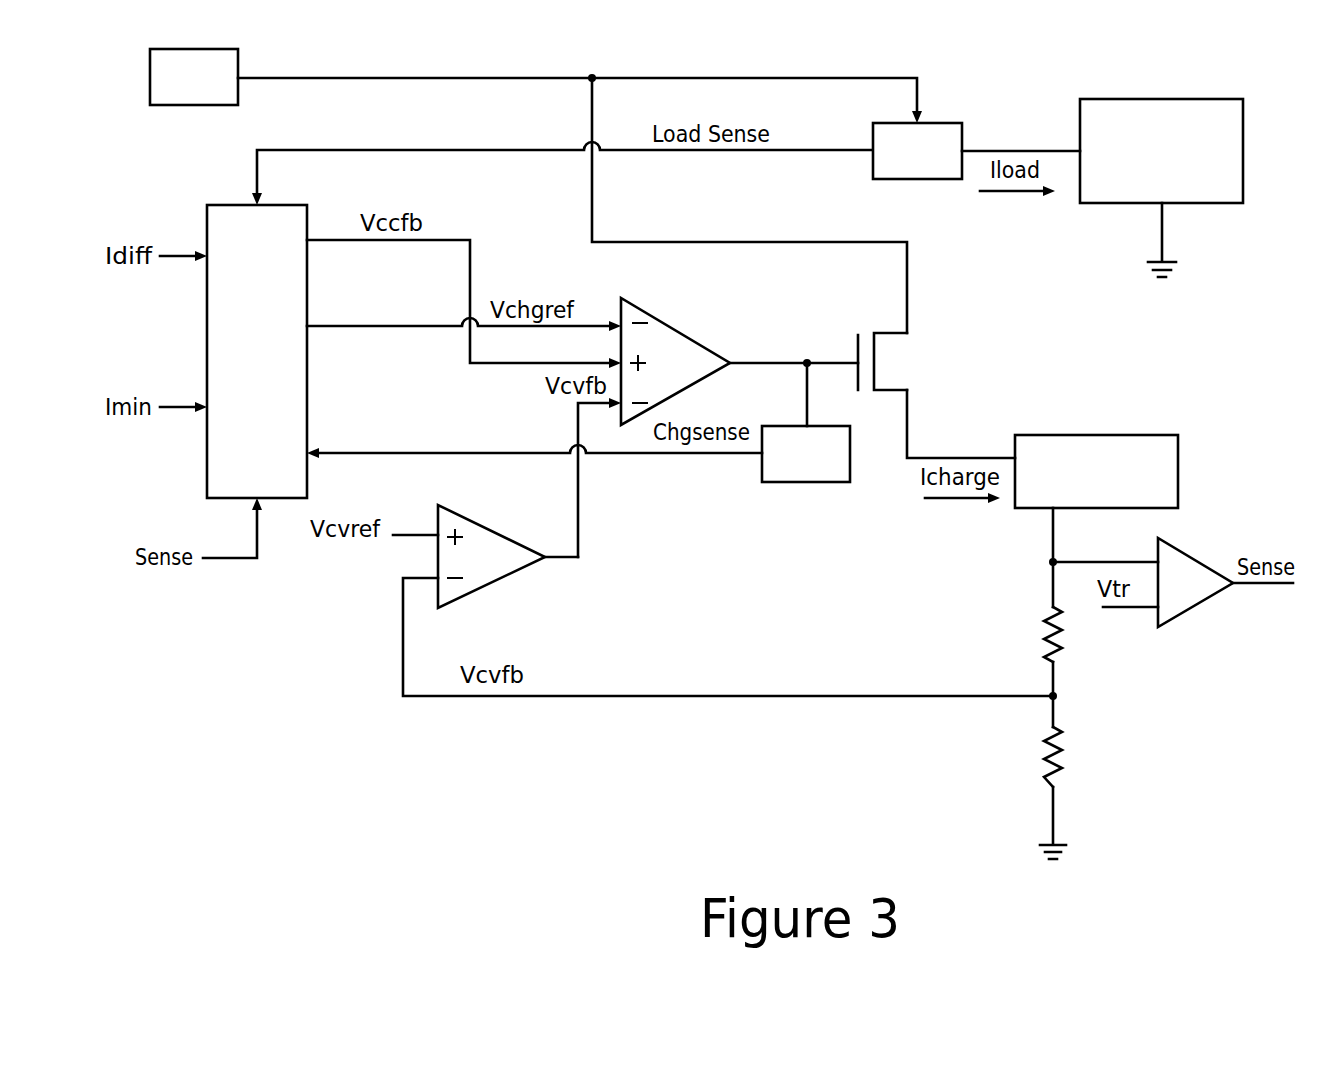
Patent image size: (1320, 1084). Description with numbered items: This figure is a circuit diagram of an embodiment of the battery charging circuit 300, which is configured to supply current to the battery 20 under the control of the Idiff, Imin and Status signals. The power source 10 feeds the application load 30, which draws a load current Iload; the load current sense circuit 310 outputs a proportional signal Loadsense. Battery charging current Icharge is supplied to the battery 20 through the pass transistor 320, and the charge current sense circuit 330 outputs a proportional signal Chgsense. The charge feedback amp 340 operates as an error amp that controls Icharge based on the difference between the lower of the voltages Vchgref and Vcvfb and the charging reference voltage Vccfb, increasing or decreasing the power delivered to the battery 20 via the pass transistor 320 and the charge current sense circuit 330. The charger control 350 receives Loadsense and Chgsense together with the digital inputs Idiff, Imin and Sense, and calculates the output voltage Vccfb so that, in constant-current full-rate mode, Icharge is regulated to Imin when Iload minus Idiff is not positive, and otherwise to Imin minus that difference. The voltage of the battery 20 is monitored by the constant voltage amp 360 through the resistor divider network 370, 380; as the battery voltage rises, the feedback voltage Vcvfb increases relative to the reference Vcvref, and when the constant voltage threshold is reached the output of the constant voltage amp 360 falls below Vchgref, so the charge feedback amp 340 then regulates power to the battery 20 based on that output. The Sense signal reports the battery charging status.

The power source 10 is at (207, 89).
The battery 20 is at (1111, 496).
The application load 30 is at (1176, 188).
The battery charging circuit 300 is at (650, 821).
The load current sense circuit 310 is at (937, 164).
The pass transistor 320 is at (911, 361).
The charge current sense circuit 330 is at (826, 467).
The charge feedback amp 340 is at (691, 375).
The charger control 350 is at (276, 346).
The constant voltage amp 360 is at (509, 568).
The resistor divider network resistor 370 is at (1026, 757).
The resistor divider network resistor 380 is at (1207, 597).